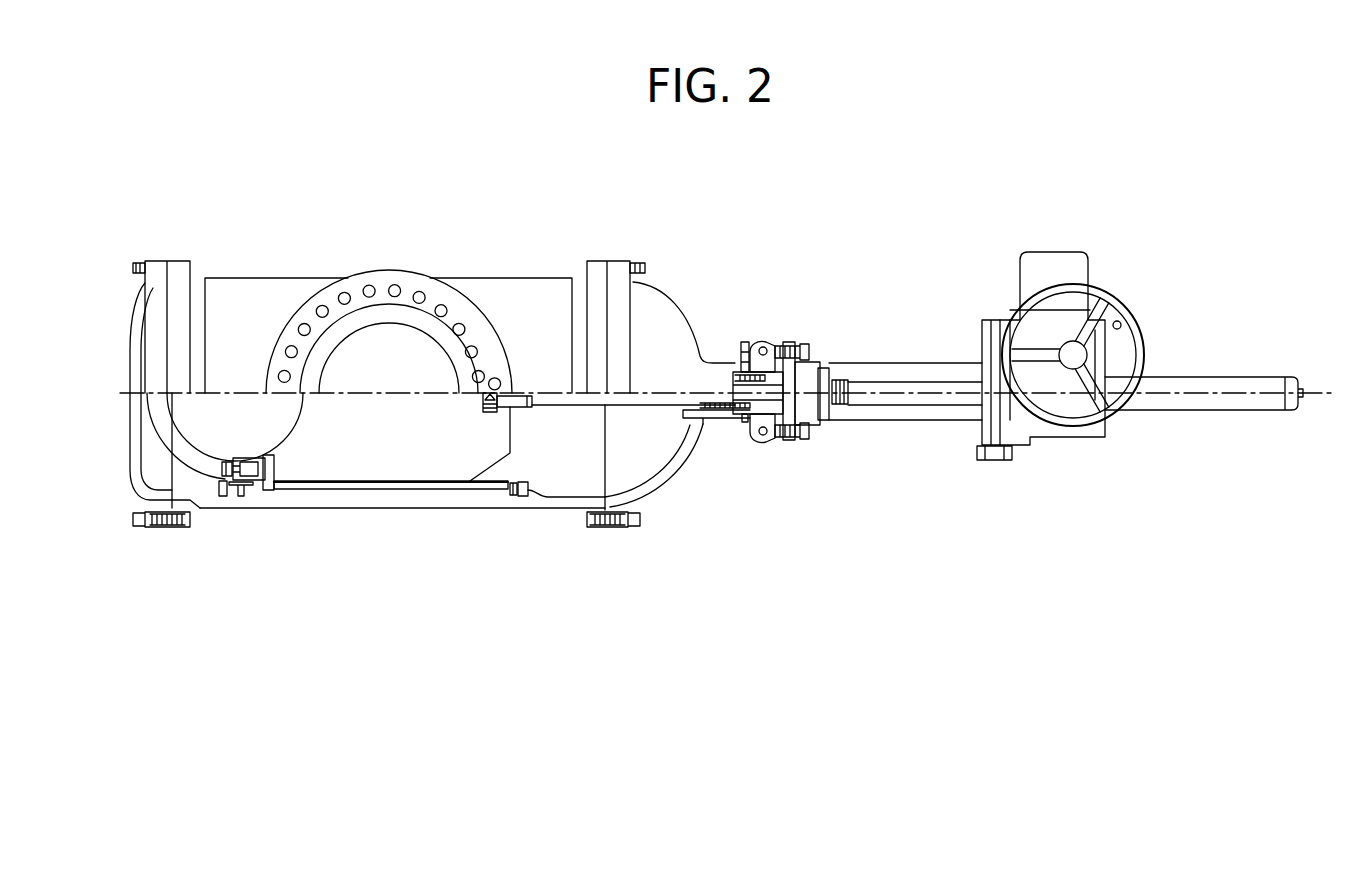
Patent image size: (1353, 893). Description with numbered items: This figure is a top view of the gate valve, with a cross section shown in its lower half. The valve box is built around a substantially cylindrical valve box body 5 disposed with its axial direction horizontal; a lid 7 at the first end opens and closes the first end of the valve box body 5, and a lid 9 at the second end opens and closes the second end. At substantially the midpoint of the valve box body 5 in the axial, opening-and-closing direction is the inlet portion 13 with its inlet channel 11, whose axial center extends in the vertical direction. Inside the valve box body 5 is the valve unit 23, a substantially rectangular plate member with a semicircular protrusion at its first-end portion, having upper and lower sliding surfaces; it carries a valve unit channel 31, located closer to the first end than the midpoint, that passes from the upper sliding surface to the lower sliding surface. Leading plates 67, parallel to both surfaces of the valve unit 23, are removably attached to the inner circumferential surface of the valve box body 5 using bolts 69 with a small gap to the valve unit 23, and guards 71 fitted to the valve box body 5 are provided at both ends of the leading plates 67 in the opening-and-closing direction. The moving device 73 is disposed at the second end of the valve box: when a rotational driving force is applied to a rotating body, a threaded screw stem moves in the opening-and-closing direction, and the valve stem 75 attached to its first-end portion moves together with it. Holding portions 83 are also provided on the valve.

The valve box body 5 is at (452, 500).
The lid 7 is at (133, 475).
The lid 9 is at (668, 486).
The inlet channel 11 is at (393, 347).
The inlet portion 13 is at (460, 298).
The valve unit 23 is at (512, 425).
The valve unit channel 31 is at (188, 413).
The leading plates 67 is at (403, 483).
The bolts 69 is at (243, 497).
The guards 71 is at (230, 483).
The moving device 73 is at (887, 329).
The valve stem 75 is at (645, 430).
The holding portions 83 is at (231, 437).